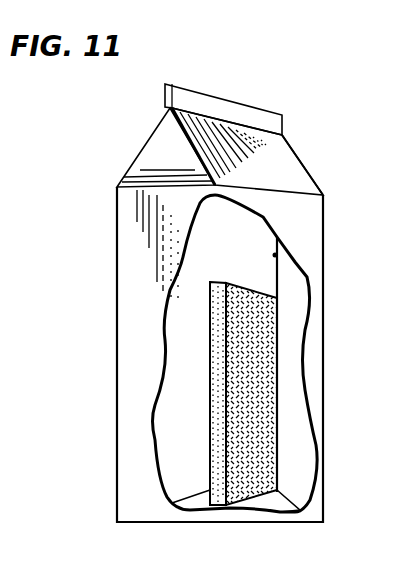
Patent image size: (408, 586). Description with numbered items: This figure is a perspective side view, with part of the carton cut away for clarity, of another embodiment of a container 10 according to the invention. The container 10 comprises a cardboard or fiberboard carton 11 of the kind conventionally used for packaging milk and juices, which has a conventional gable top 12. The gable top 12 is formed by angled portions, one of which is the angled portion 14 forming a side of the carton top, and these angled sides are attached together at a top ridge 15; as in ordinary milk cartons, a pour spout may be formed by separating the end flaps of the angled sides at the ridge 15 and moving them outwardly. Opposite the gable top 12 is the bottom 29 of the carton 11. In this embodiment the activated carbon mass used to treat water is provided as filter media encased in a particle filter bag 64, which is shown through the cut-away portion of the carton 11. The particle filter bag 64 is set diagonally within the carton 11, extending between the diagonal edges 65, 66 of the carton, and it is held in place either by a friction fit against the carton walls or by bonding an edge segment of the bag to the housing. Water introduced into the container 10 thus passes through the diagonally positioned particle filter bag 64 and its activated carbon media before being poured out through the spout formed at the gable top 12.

The container 10 is at (328, 64).
The carton 11 is at (131, 239).
The gable top 12 is at (316, 176).
The angled portion 14 is at (255, 144).
The top ridge 15 is at (218, 100).
The bottom 29 is at (278, 505).
The particle filter bag 64 is at (209, 404).
The diagonal edge 65 is at (200, 178).
The diagonal edge 66 is at (283, 252).